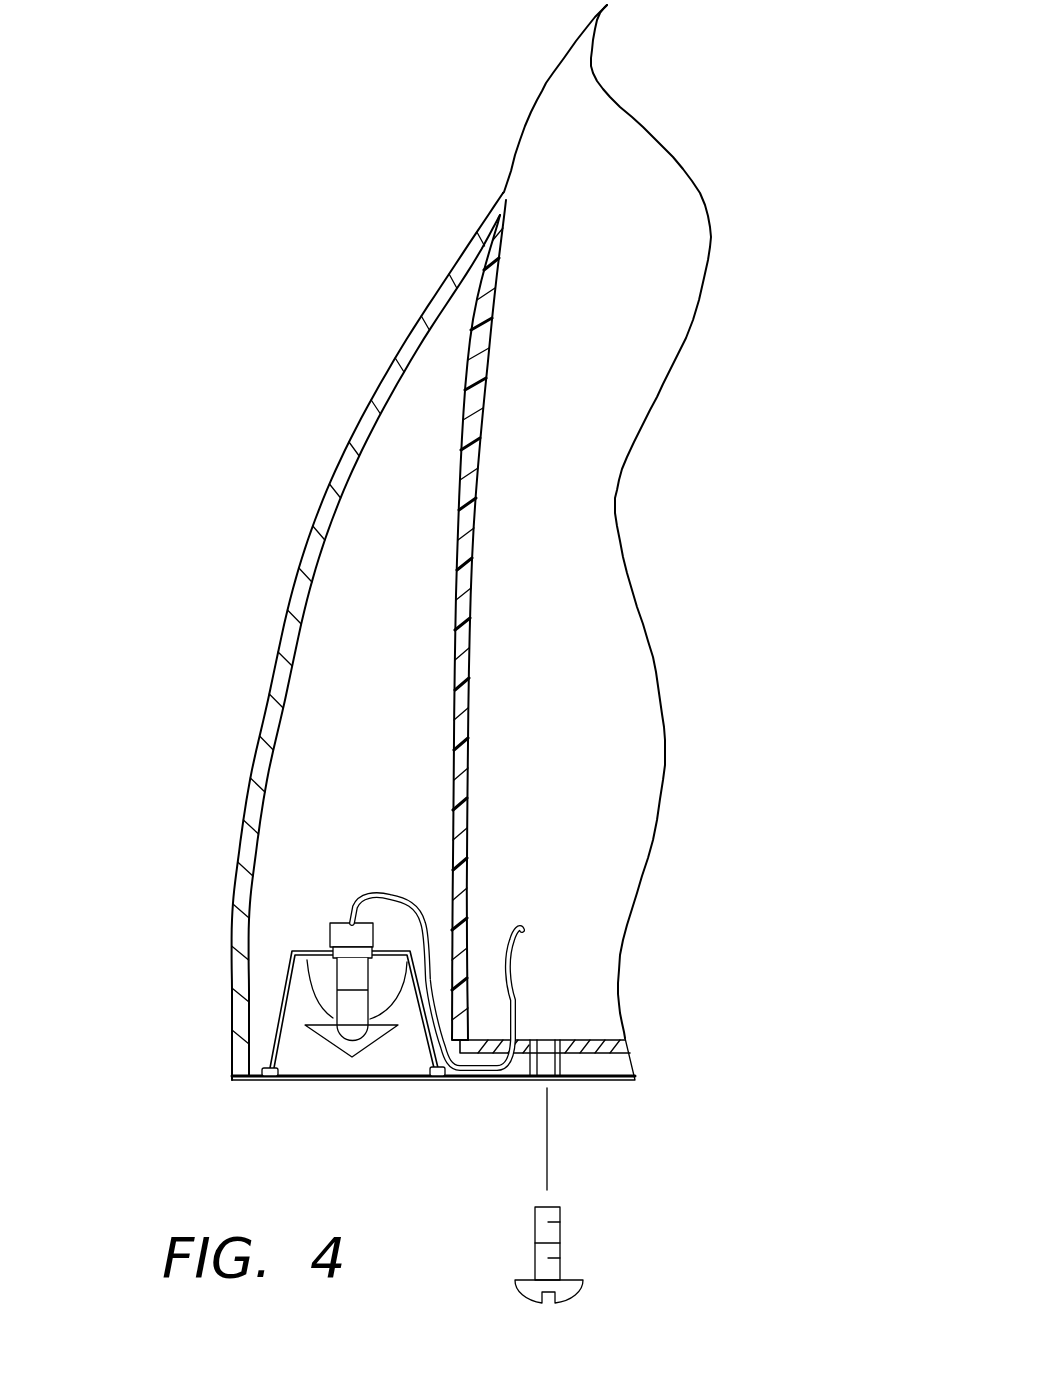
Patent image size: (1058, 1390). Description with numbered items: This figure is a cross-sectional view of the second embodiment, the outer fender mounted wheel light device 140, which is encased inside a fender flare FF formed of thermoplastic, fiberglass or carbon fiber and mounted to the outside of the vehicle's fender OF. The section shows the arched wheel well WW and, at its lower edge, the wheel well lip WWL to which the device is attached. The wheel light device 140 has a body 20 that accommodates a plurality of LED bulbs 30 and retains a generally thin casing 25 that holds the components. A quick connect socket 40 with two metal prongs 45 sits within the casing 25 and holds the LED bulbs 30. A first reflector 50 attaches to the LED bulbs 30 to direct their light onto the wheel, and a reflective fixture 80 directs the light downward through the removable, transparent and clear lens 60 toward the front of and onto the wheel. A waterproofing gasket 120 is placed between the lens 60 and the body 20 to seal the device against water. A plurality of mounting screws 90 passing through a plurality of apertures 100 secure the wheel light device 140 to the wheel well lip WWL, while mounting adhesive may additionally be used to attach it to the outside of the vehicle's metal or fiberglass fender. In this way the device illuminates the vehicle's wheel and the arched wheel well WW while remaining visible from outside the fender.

The outer fender mounted wheel light device 140 is at (418, 680).
The body 20 is at (306, 636).
The casing 25 is at (273, 1053).
The LED bulbs 30 is at (281, 1022).
The quick connect socket 40 is at (317, 935).
The metal prongs 45 is at (307, 962).
The first reflector 50 is at (358, 1052).
The transparent and clear lens 60 is at (356, 1098).
The reflective fixture 80 is at (432, 1050).
The mounting screws 90 is at (560, 1230).
The apertures 100 is at (557, 1080).
The waterproofing gasket 120 is at (262, 1078).
The outside of the vehicle's fender OF is at (540, 105).
The fender flare FF is at (392, 465).
The wheel well WW is at (607, 692).
The wheel well lip WWL is at (607, 1023).